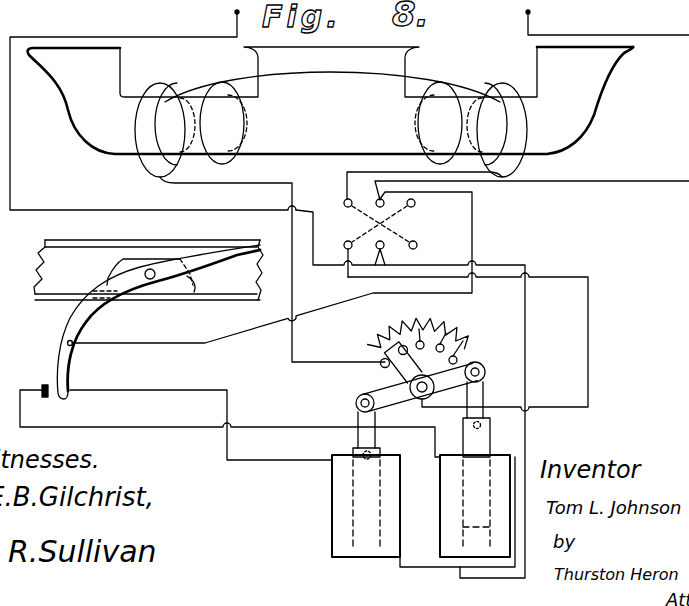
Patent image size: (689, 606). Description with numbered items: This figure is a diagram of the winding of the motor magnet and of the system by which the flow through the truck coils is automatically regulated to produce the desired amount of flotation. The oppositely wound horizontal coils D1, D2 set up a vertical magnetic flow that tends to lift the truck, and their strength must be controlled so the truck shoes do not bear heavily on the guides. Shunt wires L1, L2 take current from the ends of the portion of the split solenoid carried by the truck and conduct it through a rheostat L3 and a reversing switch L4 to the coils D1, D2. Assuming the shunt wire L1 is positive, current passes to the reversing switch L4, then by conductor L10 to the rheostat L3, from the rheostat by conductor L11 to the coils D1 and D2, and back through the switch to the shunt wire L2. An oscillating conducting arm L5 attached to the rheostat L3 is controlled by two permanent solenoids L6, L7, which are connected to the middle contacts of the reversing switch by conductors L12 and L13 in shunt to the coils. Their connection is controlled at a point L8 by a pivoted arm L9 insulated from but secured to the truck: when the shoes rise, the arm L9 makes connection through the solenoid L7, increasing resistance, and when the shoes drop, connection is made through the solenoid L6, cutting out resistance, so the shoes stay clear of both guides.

The shunt wire L1 is at (607, 34).
The shunt wire L2 is at (110, 37).
The rheostat L3 is at (431, 331).
The reversing switch L4 is at (410, 233).
The oscillating conducting arm L5 is at (402, 390).
The permanent solenoid L6 is at (331, 493).
The permanent solenoid L7 is at (440, 484).
The connection point L8 is at (46, 384).
The pivoted arm L9 is at (72, 313).
The conductor L10 is at (588, 338).
The conductor L11 is at (293, 288).
The conductor L12 is at (509, 265).
The conductor L13 is at (473, 217).
The horizontal coil D1 is at (157, 142).
The horizontal coil D2 is at (497, 132).